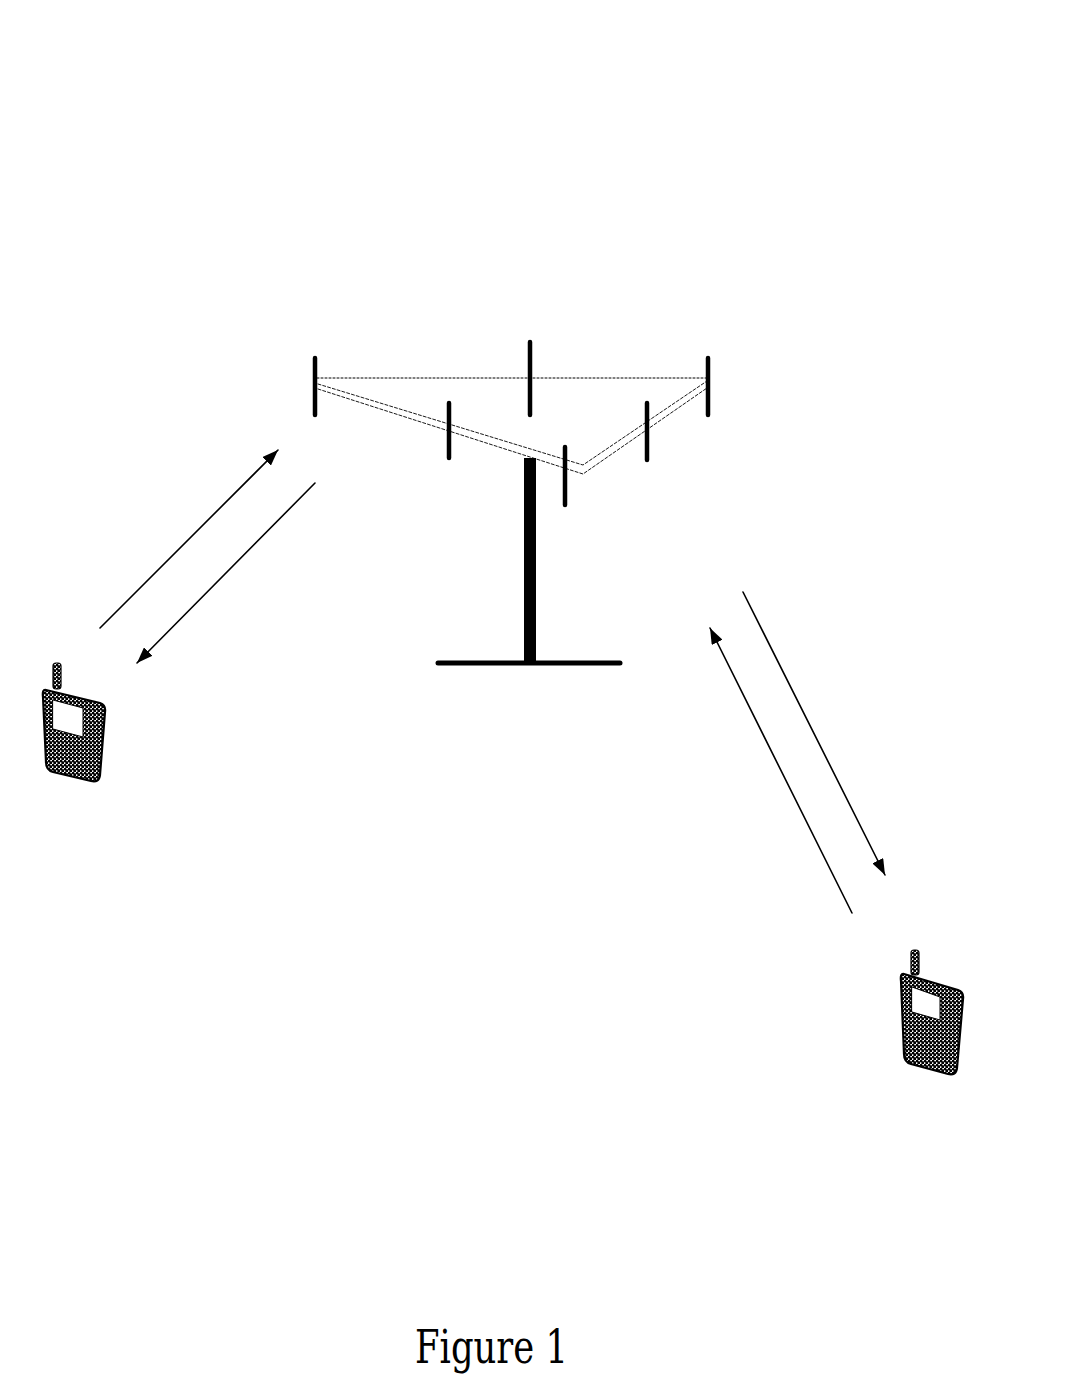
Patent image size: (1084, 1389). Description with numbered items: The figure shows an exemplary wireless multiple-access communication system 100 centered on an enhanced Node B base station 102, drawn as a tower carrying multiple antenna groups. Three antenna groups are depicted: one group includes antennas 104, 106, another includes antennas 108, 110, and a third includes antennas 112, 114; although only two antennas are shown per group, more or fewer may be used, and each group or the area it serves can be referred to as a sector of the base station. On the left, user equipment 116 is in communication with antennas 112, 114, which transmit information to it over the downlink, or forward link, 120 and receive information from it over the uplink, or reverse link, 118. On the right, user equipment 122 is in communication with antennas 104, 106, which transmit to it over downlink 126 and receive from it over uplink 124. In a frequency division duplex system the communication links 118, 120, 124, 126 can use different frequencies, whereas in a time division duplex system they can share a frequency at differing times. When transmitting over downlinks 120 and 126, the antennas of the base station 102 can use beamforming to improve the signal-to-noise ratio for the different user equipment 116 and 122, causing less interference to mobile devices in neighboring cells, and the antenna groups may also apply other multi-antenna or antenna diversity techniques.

The wireless multiple-access communication system 100 is at (815, 107).
The eNB base station 102 is at (500, 602).
The antenna 104 is at (640, 489).
The antenna 106 is at (726, 441).
The antenna 108 is at (784, 386).
The antenna 110 is at (600, 350).
The antenna 112 is at (254, 358).
The antenna 114 is at (393, 467).
The user equipment 116 is at (128, 759).
The uplink 118 is at (169, 539).
The downlink 120 is at (226, 596).
The user equipment 122 is at (878, 1040).
The uplink 124 is at (752, 770).
The downlink 126 is at (836, 733).